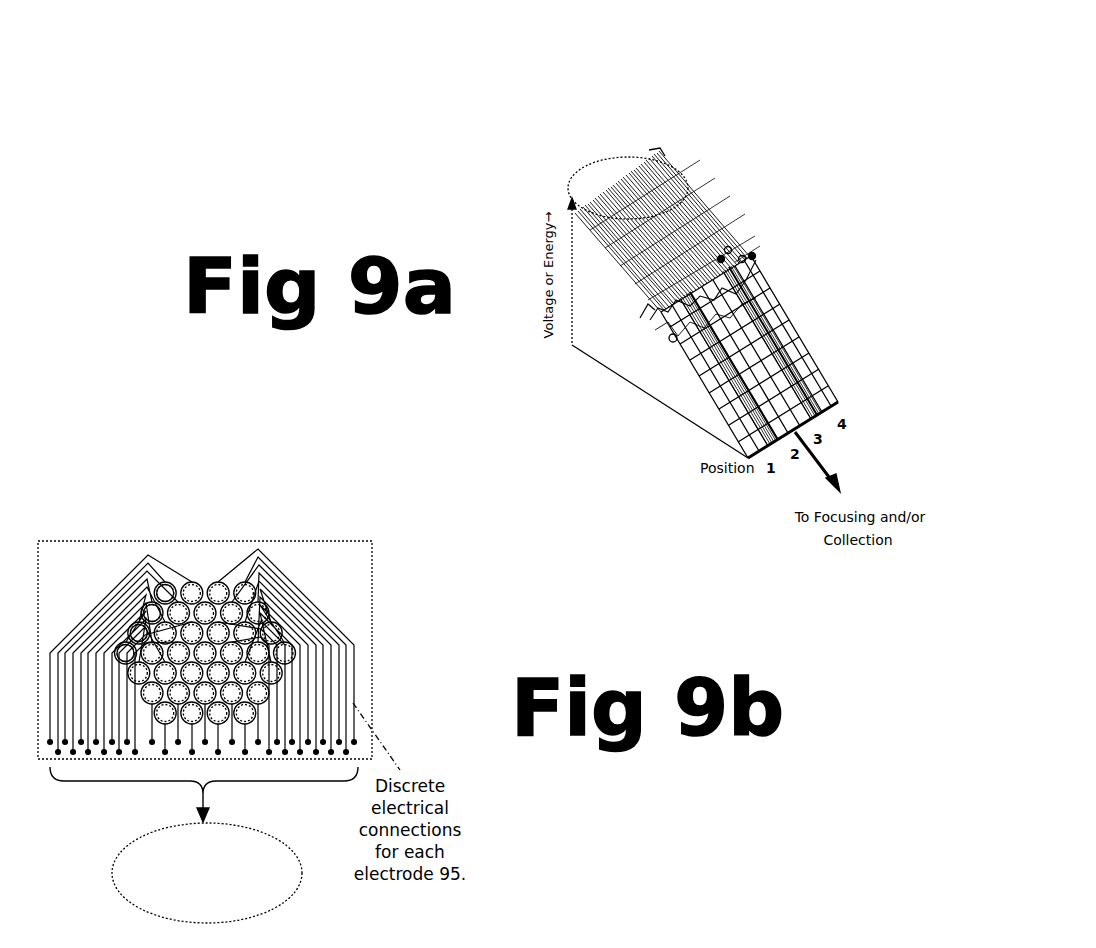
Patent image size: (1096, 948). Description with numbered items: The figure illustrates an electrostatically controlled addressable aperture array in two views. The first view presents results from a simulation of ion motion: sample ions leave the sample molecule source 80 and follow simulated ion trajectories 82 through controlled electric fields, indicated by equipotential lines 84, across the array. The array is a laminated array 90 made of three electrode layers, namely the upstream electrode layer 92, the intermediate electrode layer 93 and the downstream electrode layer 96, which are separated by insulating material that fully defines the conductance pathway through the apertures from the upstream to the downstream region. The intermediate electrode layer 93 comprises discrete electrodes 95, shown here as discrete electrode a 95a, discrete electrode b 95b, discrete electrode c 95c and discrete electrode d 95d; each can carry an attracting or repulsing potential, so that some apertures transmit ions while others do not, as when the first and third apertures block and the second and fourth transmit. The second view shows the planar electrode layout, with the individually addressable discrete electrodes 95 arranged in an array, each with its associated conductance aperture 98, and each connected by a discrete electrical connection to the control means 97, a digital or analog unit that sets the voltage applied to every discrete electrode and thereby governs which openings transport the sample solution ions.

In FIG. 9A, the sample molecule source 80 is at (661, 230).
In FIG. 9A, the simulated ion trajectories 82 is at (810, 357).
In FIG. 9A, the equipotential lines 84 is at (776, 297).
In FIG. 9A, the laminated array 90 is at (776, 238).
In FIG. 9A, the upstream electrode layer 92 is at (644, 311).
In FIG. 9A, the intermediate electrode layer 93 is at (657, 328).
In FIG. 9B, the intermediate electrode layer 93 is at (373, 588).
In FIG. 9A, the downstream electrode layer 96 is at (669, 345).
In FIG. 9A, the discrete electrode a 95a is at (729, 246).
In FIG. 9A, the discrete electrode b 95b is at (722, 256).
In FIG. 9A, the discrete electrode c 95c is at (742, 256).
In FIG. 9A, the discrete electrode d 95d is at (753, 252).
In FIG. 9B, the discrete electrodes 95 is at (246, 584).
In FIG. 9B, the conductance aperture 98 is at (120, 650).
In FIG. 9B, the control means 97 is at (207, 873).